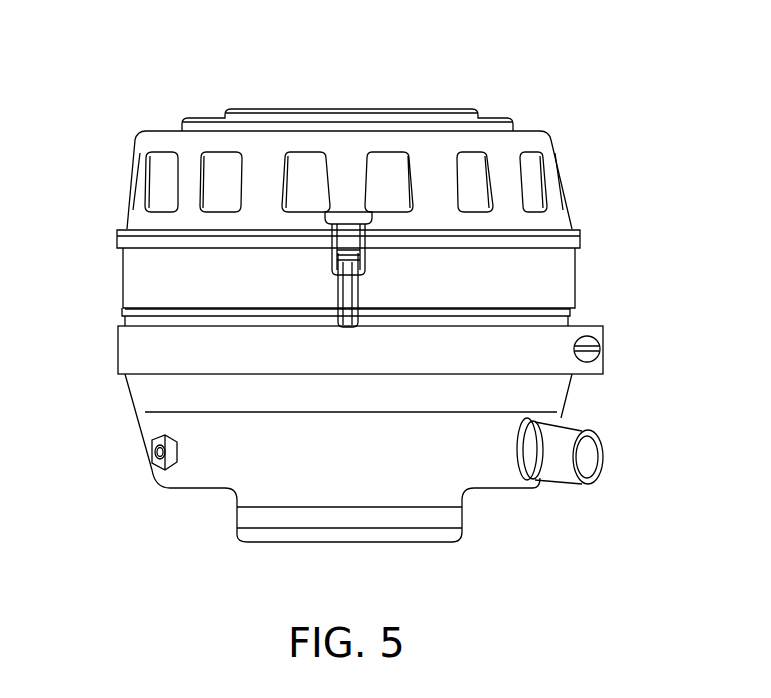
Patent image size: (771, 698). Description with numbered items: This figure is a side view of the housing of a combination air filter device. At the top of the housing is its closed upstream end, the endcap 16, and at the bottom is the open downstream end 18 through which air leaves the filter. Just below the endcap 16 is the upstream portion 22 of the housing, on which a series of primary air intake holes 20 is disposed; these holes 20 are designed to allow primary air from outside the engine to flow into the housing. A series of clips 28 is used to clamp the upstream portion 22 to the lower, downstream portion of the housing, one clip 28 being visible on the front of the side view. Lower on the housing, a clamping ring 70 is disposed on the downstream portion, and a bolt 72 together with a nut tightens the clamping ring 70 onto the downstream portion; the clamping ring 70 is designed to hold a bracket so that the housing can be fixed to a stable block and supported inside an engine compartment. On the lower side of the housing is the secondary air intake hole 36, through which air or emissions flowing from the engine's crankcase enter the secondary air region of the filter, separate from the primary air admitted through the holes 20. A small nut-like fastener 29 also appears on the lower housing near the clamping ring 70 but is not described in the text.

The endcap 16 is at (365, 105).
The open downstream end 18 is at (250, 543).
The primary air intake holes 20 is at (527, 182).
The upstream portion 22 is at (557, 218).
The clips 28 is at (333, 298).
The mounting nut 29 is at (150, 441).
The secondary air intake hole 36 is at (573, 427).
The clamping ring 70 is at (118, 356).
The bolt 72 is at (592, 347).